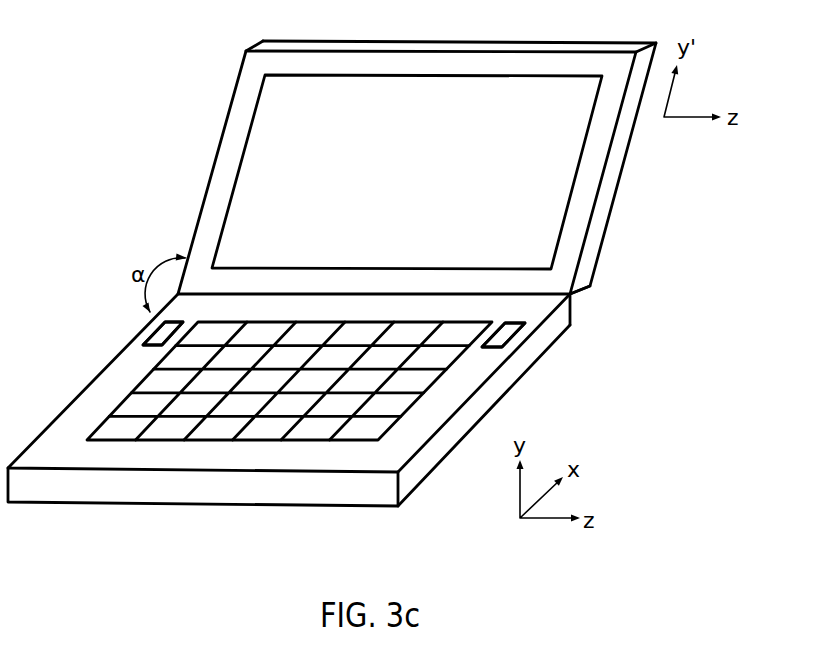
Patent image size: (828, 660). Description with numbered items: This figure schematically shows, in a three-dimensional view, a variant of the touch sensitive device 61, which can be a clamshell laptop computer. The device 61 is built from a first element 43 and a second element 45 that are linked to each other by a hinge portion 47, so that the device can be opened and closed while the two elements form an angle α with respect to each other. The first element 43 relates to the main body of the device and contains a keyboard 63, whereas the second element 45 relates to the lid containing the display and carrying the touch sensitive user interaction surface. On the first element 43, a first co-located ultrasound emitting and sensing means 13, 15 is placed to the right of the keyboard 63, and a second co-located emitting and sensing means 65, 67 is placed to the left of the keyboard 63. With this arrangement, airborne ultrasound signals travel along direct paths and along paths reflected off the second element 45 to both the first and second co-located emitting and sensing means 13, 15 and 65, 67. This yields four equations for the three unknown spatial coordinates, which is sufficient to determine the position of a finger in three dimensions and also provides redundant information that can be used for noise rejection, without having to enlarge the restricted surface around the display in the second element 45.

The device 61 is at (103, 150).
The second element 45 is at (237, 104).
The hinge portion 47 is at (572, 296).
The first element 43 is at (50, 461).
The keyboard 63 is at (297, 410).
The second co-located emitting means 65 is at (158, 333).
The second co-located sensing means 67 is at (163, 333).
The ultrasound signal emitting means 13 is at (518, 332).
The ultrasound sensing means 15 is at (503, 335).